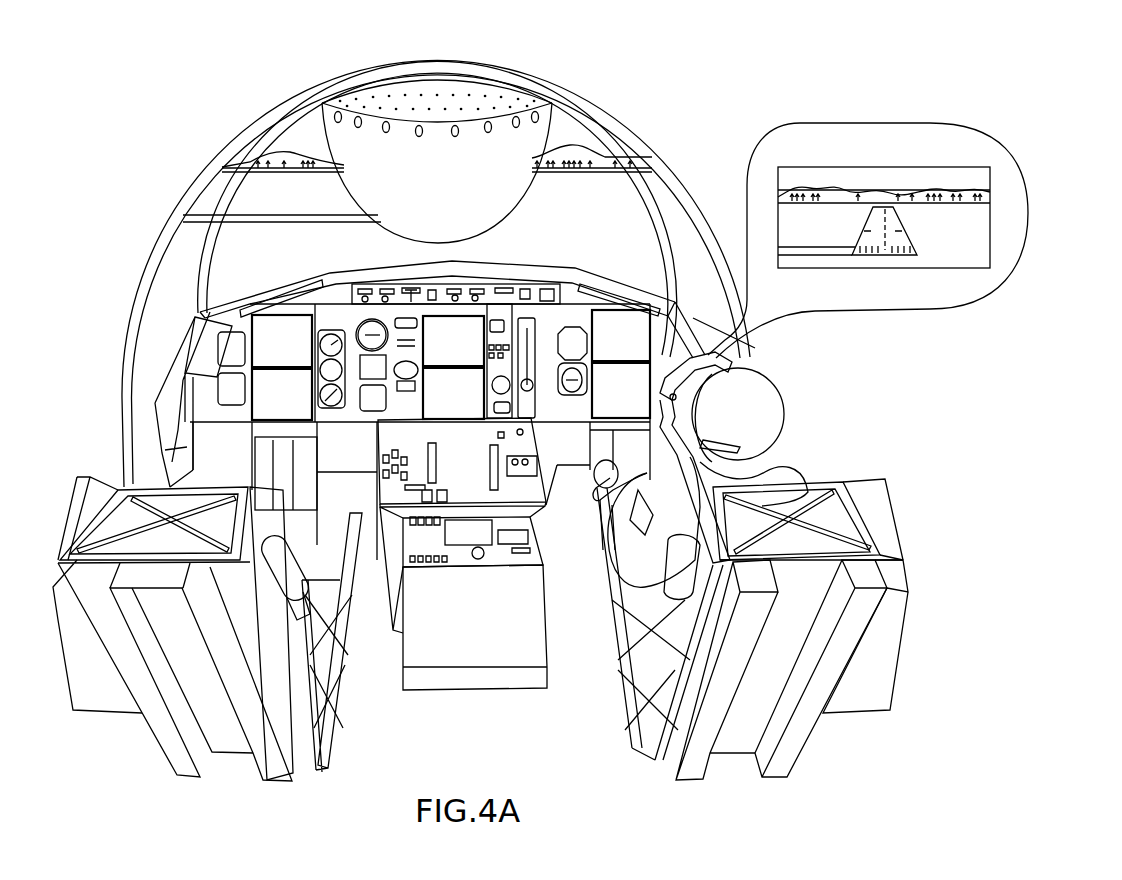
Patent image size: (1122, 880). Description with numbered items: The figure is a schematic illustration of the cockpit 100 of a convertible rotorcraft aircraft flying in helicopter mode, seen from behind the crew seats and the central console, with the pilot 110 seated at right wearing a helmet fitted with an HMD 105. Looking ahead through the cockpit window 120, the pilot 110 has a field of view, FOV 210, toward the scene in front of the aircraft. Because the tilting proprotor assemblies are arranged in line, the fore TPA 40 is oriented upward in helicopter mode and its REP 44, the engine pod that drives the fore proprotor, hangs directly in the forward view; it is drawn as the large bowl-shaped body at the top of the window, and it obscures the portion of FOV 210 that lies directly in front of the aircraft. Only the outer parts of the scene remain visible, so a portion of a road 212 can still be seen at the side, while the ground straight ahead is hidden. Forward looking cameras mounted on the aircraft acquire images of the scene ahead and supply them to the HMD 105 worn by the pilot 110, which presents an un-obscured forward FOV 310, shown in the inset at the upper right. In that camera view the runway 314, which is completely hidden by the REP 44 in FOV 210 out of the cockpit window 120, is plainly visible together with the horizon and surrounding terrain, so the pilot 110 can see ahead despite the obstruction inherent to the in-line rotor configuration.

The fore TPA 40 is at (316, 117).
The REP 44 is at (333, 141).
The FOV 210 is at (590, 208).
The cockpit window 120 is at (627, 217).
The road 212 is at (247, 223).
The forward FOV 310 is at (901, 221).
The runway 314 is at (903, 221).
The HMD 105 is at (714, 360).
The pilot 110 is at (799, 431).
The cockpit 100 is at (528, 555).